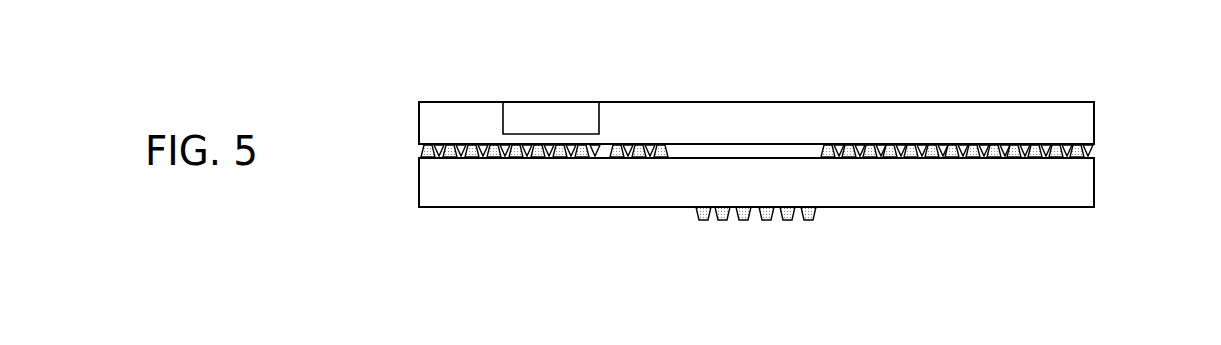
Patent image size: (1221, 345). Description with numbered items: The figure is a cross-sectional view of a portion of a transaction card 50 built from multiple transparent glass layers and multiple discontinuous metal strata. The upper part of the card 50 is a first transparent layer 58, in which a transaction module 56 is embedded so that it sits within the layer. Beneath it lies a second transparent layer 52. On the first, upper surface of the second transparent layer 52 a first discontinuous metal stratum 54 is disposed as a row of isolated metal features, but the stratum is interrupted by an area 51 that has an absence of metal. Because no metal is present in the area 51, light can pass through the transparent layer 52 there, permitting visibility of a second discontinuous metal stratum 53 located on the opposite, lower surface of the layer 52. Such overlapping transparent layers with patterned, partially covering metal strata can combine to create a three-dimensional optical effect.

The card 50 is at (1080, 85).
The area 51 is at (746, 140).
The second transparent layer 52 is at (887, 191).
The second discontinuous metal stratum 53 is at (841, 218).
The first discontinuous metal stratum 54 is at (1108, 150).
The transaction module 56 is at (555, 131).
The first transparent layer 58 is at (887, 131).